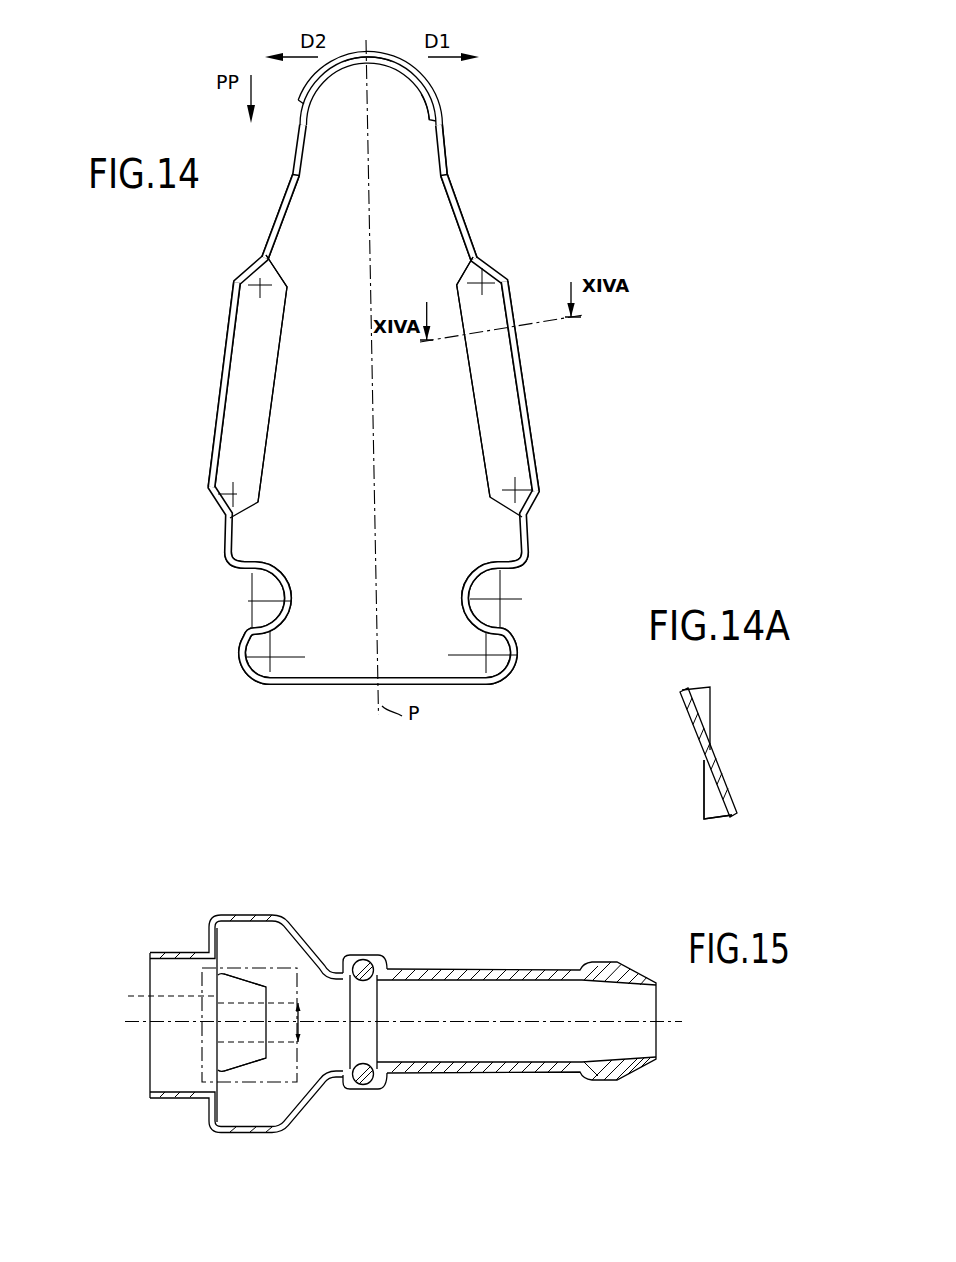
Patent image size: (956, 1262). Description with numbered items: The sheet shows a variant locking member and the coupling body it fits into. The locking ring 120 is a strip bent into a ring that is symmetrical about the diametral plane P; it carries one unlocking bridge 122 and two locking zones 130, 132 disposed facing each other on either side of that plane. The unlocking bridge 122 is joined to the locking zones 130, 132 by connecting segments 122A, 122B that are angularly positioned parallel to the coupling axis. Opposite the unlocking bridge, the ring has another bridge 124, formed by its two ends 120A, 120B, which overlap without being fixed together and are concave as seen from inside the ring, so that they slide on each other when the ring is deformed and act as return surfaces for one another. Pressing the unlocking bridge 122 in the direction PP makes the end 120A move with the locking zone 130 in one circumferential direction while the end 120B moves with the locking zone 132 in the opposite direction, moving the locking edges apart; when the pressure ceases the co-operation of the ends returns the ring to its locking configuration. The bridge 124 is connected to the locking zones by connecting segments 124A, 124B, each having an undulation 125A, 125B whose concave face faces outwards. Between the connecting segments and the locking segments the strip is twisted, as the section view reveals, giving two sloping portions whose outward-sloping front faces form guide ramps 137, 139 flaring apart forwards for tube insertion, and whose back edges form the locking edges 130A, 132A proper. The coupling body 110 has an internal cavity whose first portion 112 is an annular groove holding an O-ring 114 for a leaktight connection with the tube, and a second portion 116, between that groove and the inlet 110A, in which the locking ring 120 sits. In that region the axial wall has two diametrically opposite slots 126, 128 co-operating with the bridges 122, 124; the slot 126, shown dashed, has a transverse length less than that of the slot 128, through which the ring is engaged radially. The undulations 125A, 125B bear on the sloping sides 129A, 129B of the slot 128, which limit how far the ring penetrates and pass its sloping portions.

In FIG. 15, the body of the coupling 110 is at (455, 969).
In FIG. 15, the inlet of the body 110A is at (150, 953).
In FIG. 15, the first portion of the cavity 112 is at (372, 1034).
In FIG. 15, the O-ring 114 is at (362, 960).
In FIG. 15, the second portion of the cavity 116 is at (248, 932).
In FIG. 14, the locking ring 120 is at (460, 142).
In FIG. 14, the first end of the ring 120A is at (386, 63).
In FIG. 14, the second end of the ring 120B is at (357, 51).
In FIG. 14, the unlocking bridge 122 is at (387, 40).
In FIG. 14, the connecting segment 122A is at (271, 228).
In FIG. 14, the connecting segment 122B is at (463, 205).
In FIG. 14, the bridge 124 is at (300, 686).
In FIG. 14, the connecting segment 124A is at (258, 593).
In FIG. 14, the connecting segment 124B is at (500, 580).
In FIG. 14, the undulation 125A is at (288, 580).
In FIG. 14, the undulation 125B is at (478, 578).
In FIG. 15, the slot 126 is at (223, 1025).
In FIG. 15, the slot 128 is at (220, 1055).
In FIG. 15, the side of the slot 129A is at (247, 1053).
In FIG. 15, the side of the slot 129B is at (233, 988).
In FIG. 14, the locking zone 130 is at (266, 363).
In FIG. 14, the locking edge 130A is at (268, 437).
In FIG. 14, the locking zone 132 is at (478, 353).
In FIG. 14A, the locking zone 132 is at (725, 725).
In FIG. 14, the locking edge 132A is at (505, 418).
In FIG. 14A, the locking edge 132A is at (682, 689).
In FIG. 14, the guide ramp 137 is at (240, 397).
In FIG. 14, the guide ramp 139 is at (530, 417).
In FIG. 14A, the guide ramp 139 is at (733, 815).